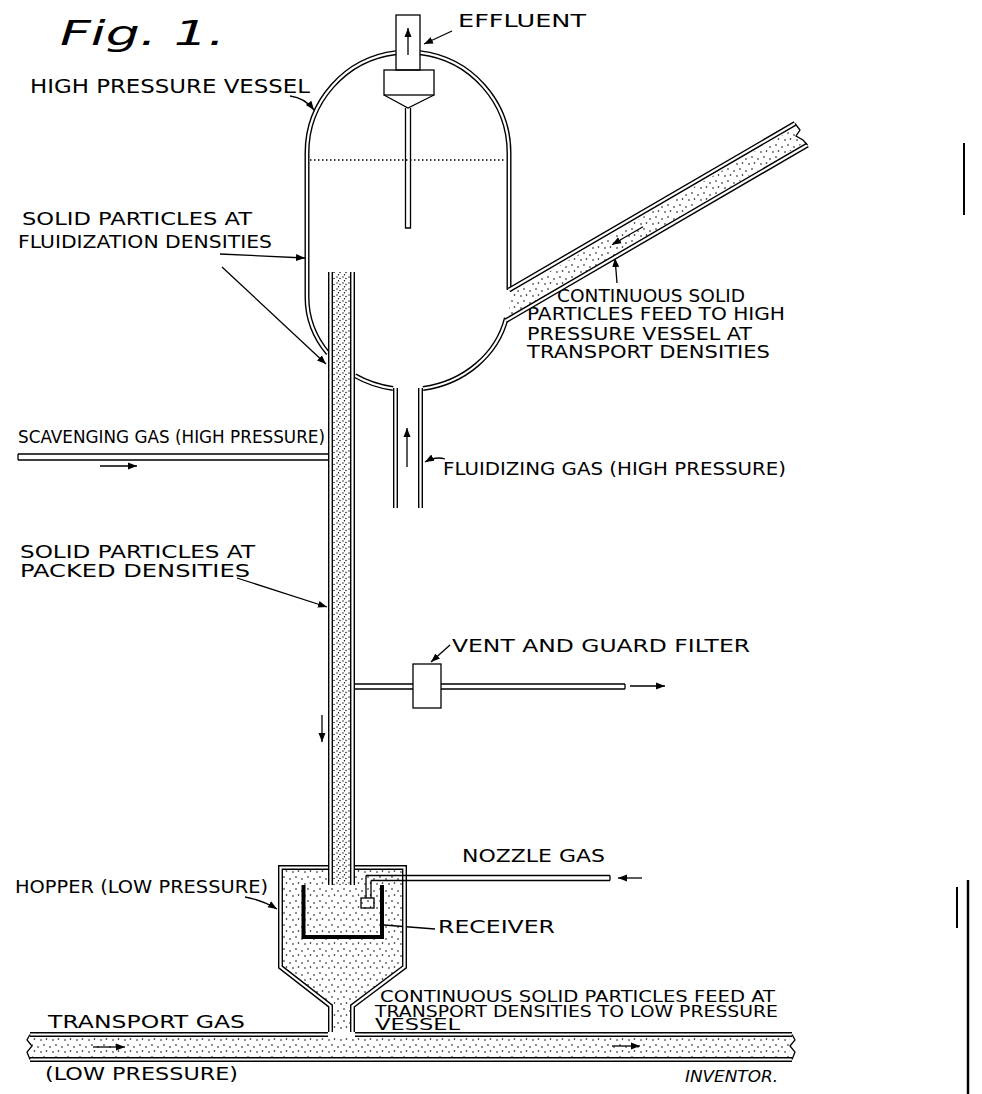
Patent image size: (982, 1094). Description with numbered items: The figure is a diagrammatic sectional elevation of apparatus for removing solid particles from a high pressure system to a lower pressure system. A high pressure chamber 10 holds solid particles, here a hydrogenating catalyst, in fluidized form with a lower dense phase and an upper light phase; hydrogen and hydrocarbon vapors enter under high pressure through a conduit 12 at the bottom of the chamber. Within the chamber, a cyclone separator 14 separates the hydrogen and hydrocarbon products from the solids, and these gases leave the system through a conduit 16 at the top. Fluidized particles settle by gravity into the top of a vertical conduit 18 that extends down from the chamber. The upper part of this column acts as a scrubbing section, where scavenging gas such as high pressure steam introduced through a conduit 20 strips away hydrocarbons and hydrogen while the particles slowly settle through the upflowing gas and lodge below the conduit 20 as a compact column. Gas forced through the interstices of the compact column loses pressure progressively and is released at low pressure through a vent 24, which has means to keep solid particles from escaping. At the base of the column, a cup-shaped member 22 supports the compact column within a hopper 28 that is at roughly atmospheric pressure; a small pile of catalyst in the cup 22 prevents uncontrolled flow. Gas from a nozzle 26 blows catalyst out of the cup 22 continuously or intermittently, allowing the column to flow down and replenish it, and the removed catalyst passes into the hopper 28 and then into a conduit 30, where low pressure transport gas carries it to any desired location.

The high pressure chamber 10 is at (512, 183).
The conduit 12 is at (424, 412).
The cyclone separator 14 is at (428, 86).
The conduit 16 is at (396, 28).
The vertical conduit 18 is at (356, 597).
The conduit 20 is at (248, 462).
The cup-shaped member 22 is at (282, 954).
The vent 24 is at (425, 709).
The nozzle 26 is at (374, 904).
The hopper 28 is at (407, 951).
The conduit 30 is at (295, 1064).